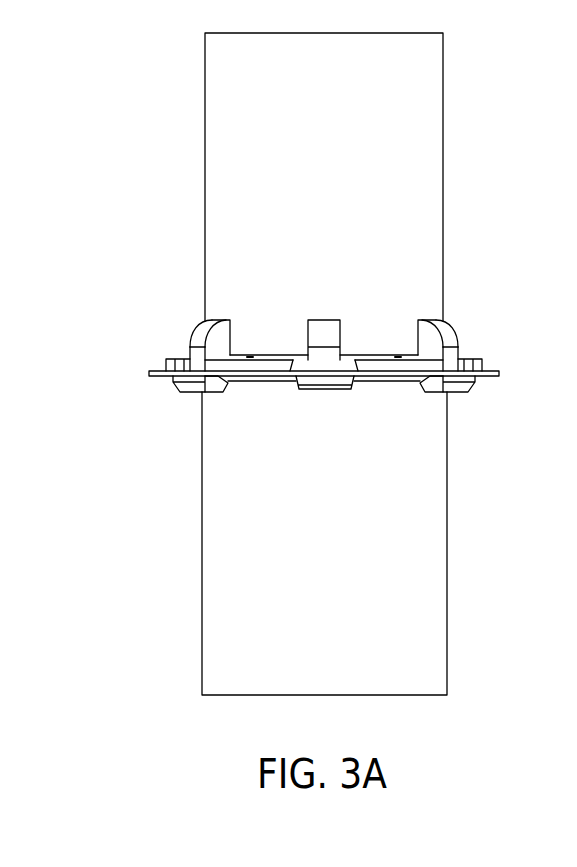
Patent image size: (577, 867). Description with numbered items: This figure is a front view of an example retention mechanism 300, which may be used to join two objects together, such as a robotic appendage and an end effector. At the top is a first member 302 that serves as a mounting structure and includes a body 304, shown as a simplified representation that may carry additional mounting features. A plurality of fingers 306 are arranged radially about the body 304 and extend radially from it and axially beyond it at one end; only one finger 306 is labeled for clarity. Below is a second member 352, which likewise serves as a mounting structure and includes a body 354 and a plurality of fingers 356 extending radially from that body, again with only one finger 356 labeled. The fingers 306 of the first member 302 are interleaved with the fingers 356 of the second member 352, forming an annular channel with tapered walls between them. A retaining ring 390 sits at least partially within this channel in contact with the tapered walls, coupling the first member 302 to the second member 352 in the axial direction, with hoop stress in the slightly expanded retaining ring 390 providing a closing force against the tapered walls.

The retention mechanism 300 is at (465, 77).
The body 304 is at (410, 170).
The first member 302 is at (471, 280).
The finger 306 is at (448, 332).
The retaining ring 390 is at (496, 370).
The second member 352 is at (471, 426).
The finger 356 is at (383, 380).
The body 354 is at (422, 536).